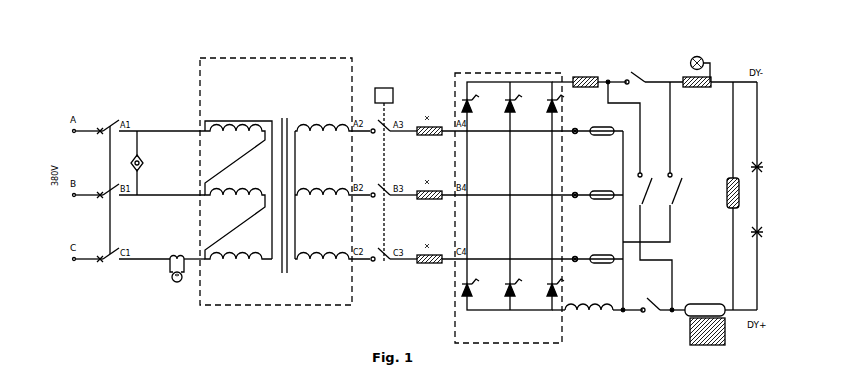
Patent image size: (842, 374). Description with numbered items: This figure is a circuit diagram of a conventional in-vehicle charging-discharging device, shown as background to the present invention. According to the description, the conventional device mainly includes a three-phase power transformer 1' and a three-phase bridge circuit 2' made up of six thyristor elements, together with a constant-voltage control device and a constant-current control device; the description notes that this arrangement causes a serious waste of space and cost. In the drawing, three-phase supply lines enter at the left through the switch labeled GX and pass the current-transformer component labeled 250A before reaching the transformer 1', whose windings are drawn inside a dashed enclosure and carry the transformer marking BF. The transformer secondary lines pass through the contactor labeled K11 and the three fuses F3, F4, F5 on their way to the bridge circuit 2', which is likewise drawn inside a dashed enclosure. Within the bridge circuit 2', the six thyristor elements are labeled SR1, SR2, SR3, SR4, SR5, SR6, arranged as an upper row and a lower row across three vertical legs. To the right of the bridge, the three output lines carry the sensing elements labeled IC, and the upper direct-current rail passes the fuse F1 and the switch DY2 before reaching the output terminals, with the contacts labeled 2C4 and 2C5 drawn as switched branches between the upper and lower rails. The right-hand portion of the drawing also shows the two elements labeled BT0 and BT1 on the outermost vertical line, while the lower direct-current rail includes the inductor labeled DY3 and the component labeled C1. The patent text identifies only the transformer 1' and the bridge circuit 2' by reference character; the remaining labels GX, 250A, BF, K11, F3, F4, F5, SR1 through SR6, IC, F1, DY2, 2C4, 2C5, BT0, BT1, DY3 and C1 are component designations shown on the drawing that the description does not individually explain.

The three-phase power transformer 1' is at (276, 160).
The three-phase bridge circuit 2' is at (508, 182).
The main disconnect switch GX is at (111, 182).
The current transformer 250A is at (173, 276).
The transformer BF is at (287, 175).
The contactor K11 is at (383, 175).
The fuse F3 is at (424, 130).
The fuse F4 is at (424, 194).
The fuse F5 is at (424, 258).
The thyristor SR1 is at (476, 105).
The thyristor SR2 is at (561, 289).
The thyristor SR3 is at (519, 105).
The thyristor SR4 is at (476, 289).
The thyristor SR5 is at (561, 105).
The thyristor SR6 is at (519, 289).
The current sensing shunts IC is at (591, 216).
The fuse F1 is at (585, 88).
The switch DY2 is at (623, 77).
The contactor contact 2C4 is at (676, 185).
The contactor contacts 2C5 is at (649, 196).
The thermal sensor BT0 is at (766, 168).
The thermal sensor BT1 is at (766, 233).
The inductor DY3 is at (599, 314).
The capacitor shunt C1 is at (705, 324).